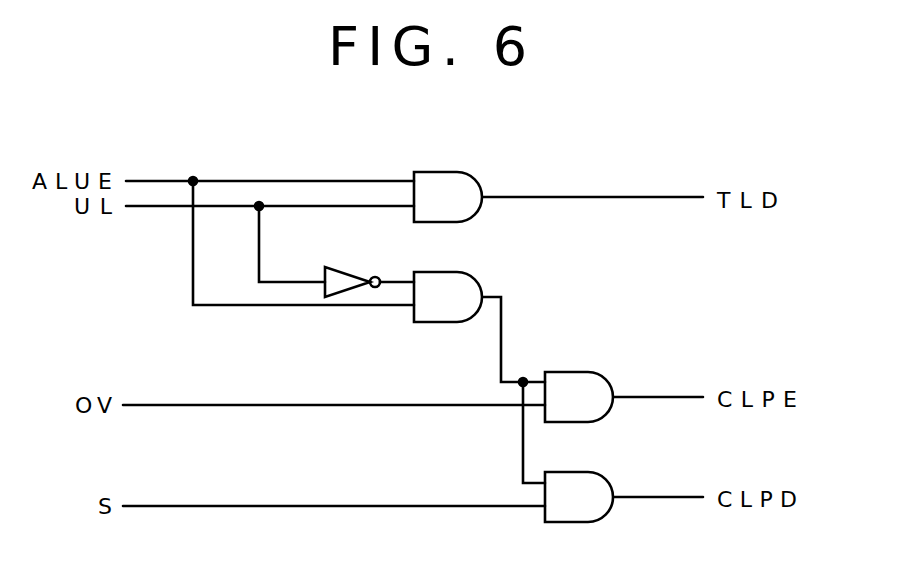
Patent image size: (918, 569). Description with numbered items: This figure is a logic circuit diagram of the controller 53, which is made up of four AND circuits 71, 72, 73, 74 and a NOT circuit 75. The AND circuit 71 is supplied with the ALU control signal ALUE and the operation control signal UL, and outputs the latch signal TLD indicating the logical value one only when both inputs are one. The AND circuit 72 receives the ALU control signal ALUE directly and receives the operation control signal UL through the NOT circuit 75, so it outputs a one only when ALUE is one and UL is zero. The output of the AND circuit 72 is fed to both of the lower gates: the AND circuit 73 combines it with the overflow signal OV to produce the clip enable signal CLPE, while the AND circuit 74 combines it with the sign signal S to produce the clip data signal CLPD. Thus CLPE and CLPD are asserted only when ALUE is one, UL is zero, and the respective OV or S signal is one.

The controller 53 is at (269, 163).
The AND circuit 71 is at (441, 172).
The AND circuit 72 is at (441, 272).
The AND circuit 73 is at (573, 372).
The AND circuit 74 is at (573, 472).
The NOT circuit 75 is at (344, 277).